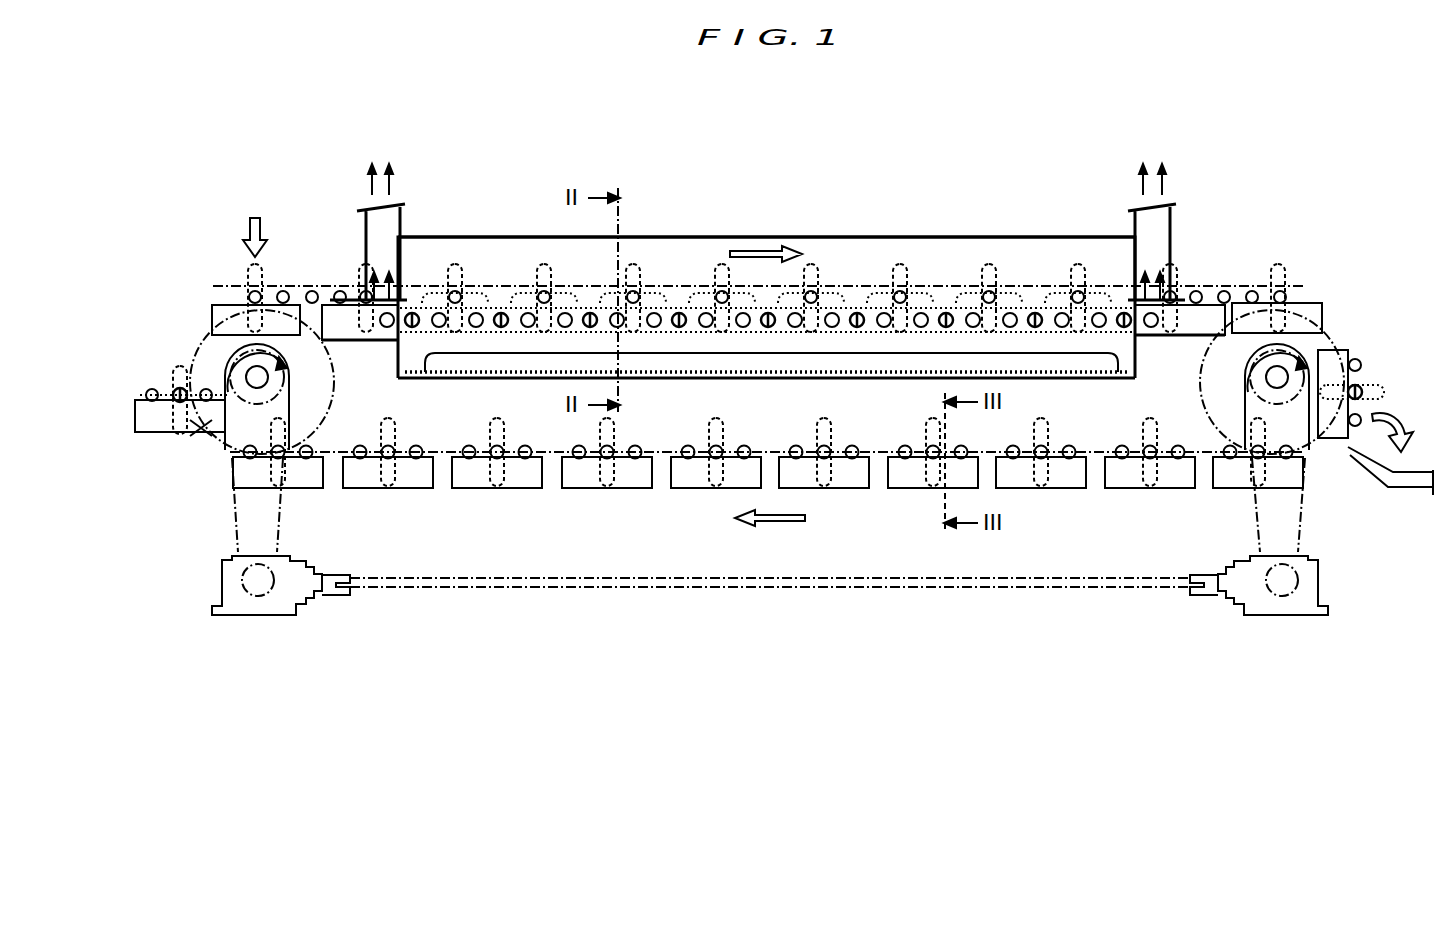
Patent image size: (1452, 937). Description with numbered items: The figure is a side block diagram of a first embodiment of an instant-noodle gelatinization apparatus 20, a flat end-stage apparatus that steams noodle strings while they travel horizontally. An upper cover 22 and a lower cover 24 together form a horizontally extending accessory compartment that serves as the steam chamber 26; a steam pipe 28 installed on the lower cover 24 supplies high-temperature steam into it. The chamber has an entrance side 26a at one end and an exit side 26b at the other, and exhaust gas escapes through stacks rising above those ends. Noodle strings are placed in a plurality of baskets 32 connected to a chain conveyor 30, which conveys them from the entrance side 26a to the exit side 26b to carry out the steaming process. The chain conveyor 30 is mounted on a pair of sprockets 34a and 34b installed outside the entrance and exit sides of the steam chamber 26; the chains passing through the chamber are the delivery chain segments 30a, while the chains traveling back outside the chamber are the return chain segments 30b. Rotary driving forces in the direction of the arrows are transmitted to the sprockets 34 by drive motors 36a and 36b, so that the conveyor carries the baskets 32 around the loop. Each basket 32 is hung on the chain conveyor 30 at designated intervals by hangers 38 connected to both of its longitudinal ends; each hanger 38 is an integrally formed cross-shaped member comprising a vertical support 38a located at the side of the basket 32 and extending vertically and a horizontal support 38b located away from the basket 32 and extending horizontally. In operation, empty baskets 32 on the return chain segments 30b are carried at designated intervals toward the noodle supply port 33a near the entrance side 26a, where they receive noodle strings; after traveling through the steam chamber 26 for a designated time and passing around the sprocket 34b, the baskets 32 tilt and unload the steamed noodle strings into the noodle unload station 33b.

The gelatinization apparatus 20 is at (766, 224).
The upper cover 22 is at (978, 237).
The lower cover 24 is at (736, 380).
The steam chamber 26 is at (669, 258).
The entrance side 26a is at (399, 292).
The exit side 26b is at (1134, 300).
The steam pipe 28 is at (855, 380).
The chain conveyor 30 is at (759, 372).
The delivery chain segments 30a is at (863, 300).
The return chain segments 30b is at (553, 468).
The basket 32 is at (463, 340).
The noodle supply port 33a is at (263, 222).
The noodle unload station 33b is at (1400, 488).
The sprockets 34 is at (208, 345).
The sprocket 34a is at (207, 438).
The sprocket 34b is at (1332, 342).
The drive motor 36a is at (228, 581).
The drive motor 36b is at (1310, 580).
The hanger 38 is at (766, 358).
The vertical support 38a is at (450, 298).
The horizontal support 38b is at (490, 300).